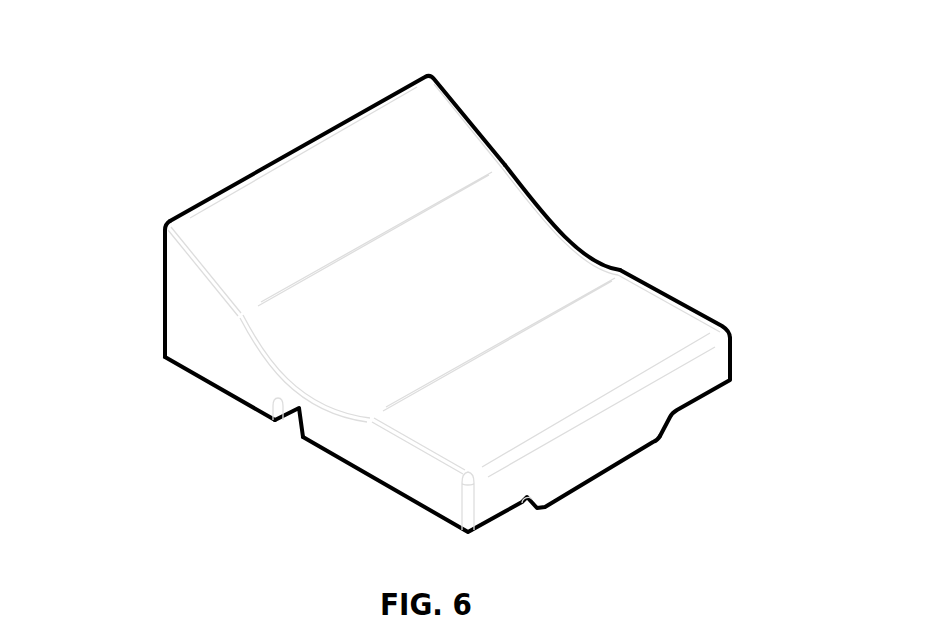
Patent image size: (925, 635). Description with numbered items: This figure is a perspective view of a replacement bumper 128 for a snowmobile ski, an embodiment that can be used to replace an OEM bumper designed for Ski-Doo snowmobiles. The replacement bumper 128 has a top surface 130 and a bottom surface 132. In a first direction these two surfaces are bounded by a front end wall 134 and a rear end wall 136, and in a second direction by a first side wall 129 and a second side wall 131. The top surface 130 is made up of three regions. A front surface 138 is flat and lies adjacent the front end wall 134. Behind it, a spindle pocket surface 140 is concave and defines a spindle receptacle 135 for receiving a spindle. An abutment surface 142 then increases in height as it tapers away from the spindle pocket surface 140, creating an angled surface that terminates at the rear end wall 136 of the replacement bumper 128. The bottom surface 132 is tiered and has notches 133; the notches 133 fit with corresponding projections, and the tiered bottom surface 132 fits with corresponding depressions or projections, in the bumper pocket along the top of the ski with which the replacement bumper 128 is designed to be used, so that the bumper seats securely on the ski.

The replacement bumper 128 is at (182, 42).
The first side wall 129 is at (194, 339).
The top surface 130 is at (630, 298).
The second side wall 131 is at (491, 146).
The bottom surface 132 is at (372, 478).
The notches 133 is at (300, 414).
The front end wall 134 is at (713, 368).
The spindle receptacle 135 is at (508, 223).
The rear end wall 136 is at (163, 296).
The front surface 138 is at (692, 327).
The spindle pocket surface 140 is at (528, 252).
The abutment surface 142 is at (449, 125).